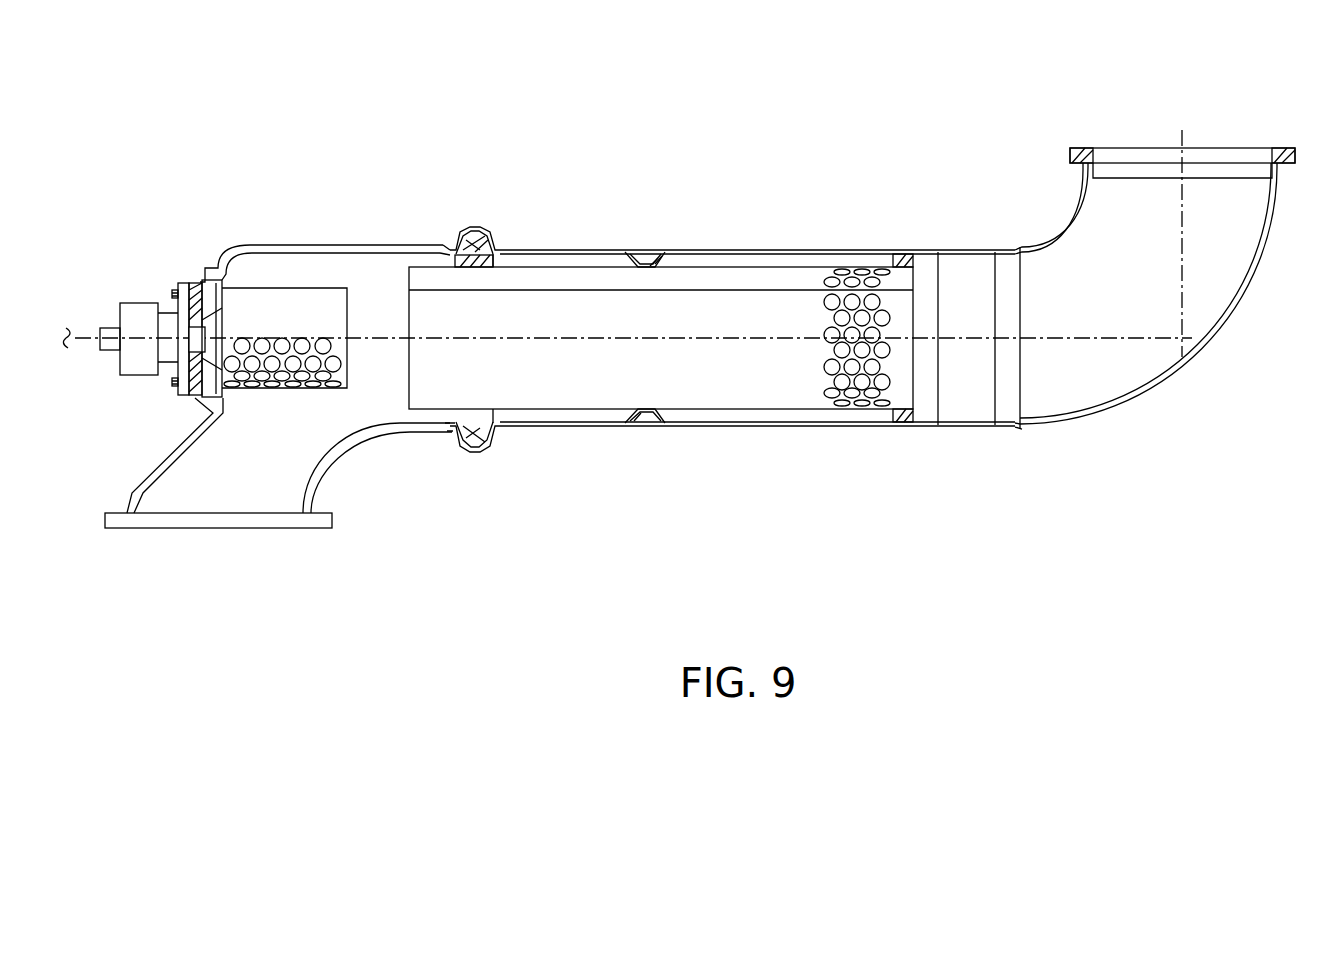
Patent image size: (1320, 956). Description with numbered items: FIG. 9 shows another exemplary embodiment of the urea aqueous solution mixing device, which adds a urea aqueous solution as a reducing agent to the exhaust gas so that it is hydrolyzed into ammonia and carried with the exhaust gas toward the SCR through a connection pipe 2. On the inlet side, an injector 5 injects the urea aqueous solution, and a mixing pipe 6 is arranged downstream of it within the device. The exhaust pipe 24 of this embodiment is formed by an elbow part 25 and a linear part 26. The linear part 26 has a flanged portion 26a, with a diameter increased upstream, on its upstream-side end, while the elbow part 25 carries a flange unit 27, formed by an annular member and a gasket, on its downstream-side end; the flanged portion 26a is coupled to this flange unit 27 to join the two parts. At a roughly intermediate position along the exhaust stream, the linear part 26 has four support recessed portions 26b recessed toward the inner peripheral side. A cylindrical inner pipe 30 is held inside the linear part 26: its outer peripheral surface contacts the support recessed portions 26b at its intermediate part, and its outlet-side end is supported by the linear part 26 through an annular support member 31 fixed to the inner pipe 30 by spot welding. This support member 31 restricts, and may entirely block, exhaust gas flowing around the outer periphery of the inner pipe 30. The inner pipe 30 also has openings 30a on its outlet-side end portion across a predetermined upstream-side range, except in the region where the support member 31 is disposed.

The connection pipe 2 is at (1262, 272).
The injector 5 is at (138, 312).
The mixing pipe 6 is at (277, 288).
The exhaust pipe 24 is at (890, 215).
The elbow part 25 is at (150, 462).
The linear part 26 is at (760, 240).
The flanged portion 26a is at (480, 230).
The support recessed portions 26b is at (643, 265).
The flange unit 27 is at (421, 279).
The inner pipe 30 is at (730, 410).
The openings 30a is at (850, 395).
The support member 31 is at (900, 425).